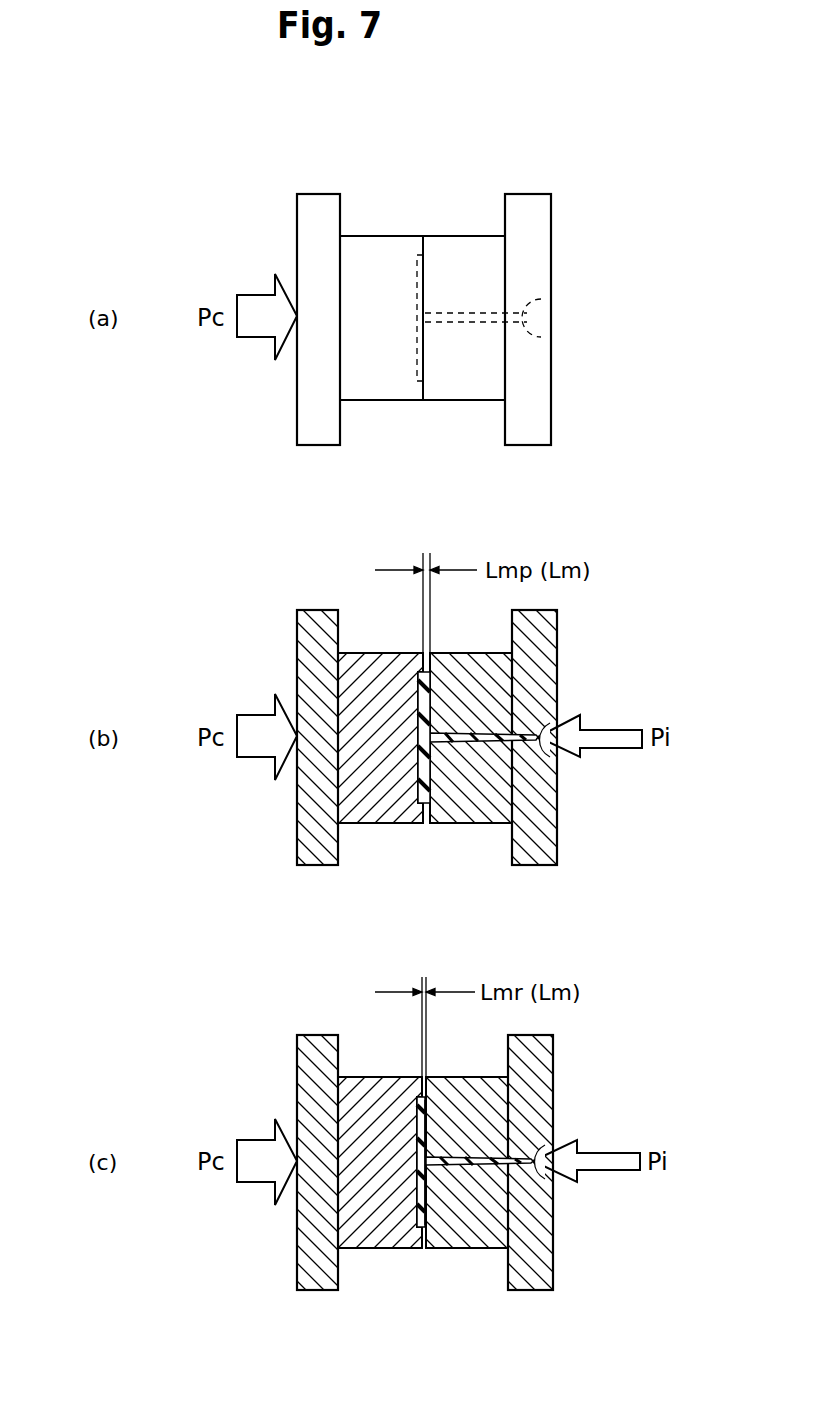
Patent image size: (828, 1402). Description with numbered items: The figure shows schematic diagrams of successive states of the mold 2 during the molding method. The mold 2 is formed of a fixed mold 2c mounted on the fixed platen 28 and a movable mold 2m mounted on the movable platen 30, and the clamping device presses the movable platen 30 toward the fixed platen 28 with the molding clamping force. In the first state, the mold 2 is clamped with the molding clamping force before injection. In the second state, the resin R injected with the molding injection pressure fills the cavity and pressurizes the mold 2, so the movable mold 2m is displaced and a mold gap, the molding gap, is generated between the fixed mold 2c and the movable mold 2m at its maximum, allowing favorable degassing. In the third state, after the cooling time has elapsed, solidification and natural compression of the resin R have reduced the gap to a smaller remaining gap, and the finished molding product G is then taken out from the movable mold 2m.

The mold 2 is at (487, 175).
The movable mold 2m is at (370, 236).
The fixed mold 2c is at (458, 236).
The fixed platen 28 is at (552, 230).
The movable platen 30 is at (296, 230).
The resin R is at (413, 772).
The molding product G is at (432, 1190).